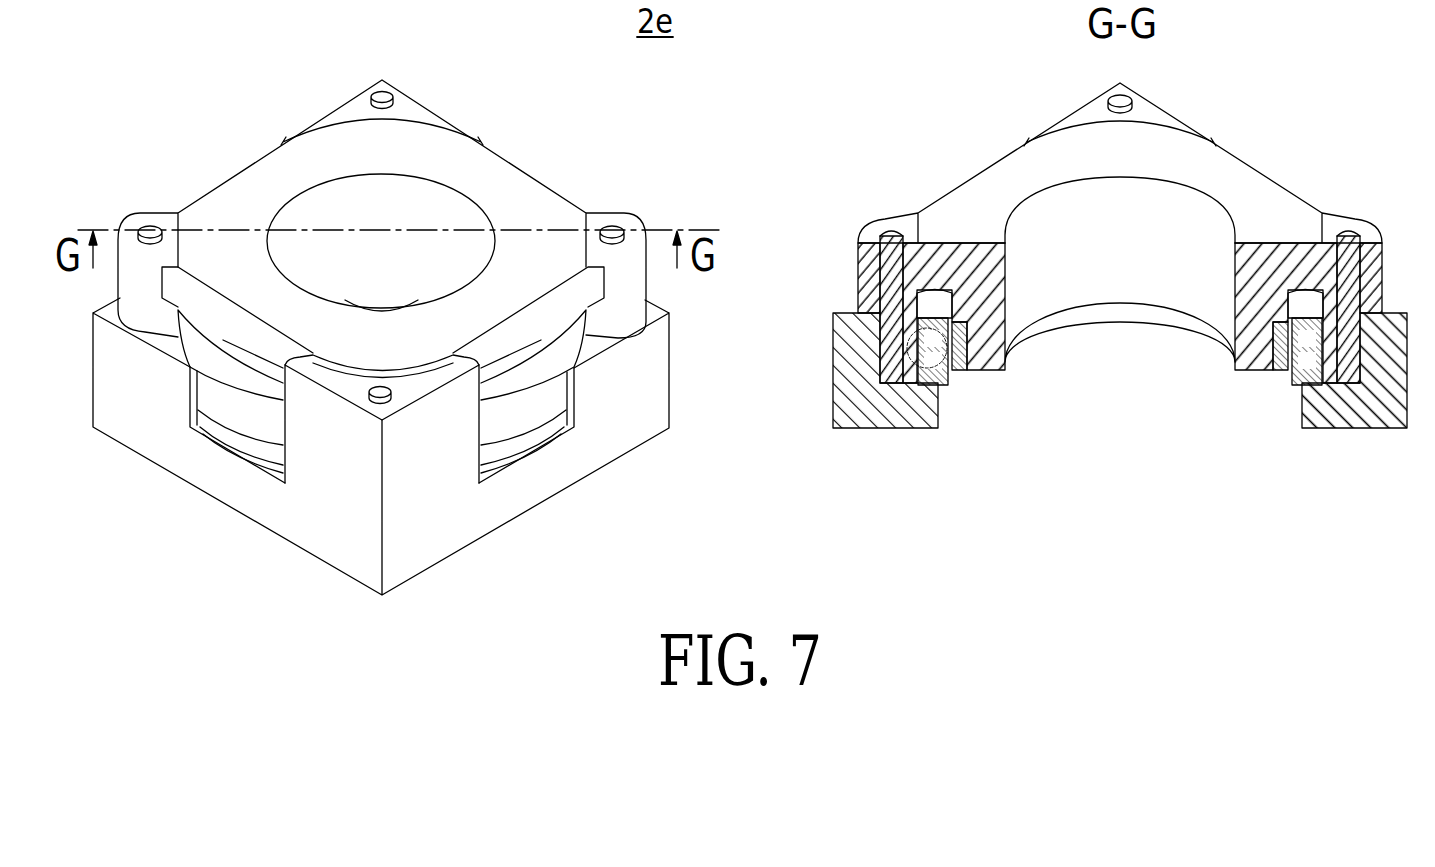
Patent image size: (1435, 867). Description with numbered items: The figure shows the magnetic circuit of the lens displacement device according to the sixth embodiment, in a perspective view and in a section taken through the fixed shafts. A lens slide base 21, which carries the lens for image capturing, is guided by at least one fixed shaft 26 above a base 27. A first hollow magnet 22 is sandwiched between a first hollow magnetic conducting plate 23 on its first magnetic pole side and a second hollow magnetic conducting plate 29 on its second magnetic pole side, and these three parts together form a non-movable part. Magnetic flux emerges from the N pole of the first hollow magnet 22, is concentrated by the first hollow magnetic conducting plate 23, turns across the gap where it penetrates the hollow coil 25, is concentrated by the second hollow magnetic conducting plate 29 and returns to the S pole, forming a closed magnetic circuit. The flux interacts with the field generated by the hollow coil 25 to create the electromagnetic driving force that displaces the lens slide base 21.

The lens slide base 21 is at (971, 185).
The first hollow magnet 22 is at (930, 378).
The first hollow magnetic conducting plate 23 is at (967, 324).
The hollow coil 25 is at (948, 372).
The fixed shaft 26 is at (892, 228).
The base 27 is at (853, 428).
The second hollow magnetic conducting plate 29 is at (950, 386).